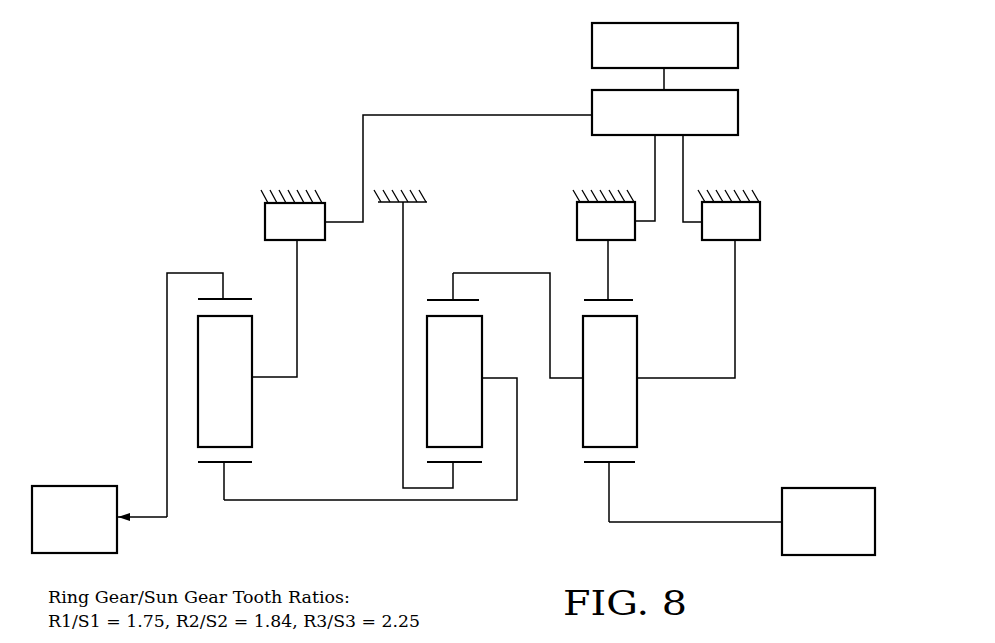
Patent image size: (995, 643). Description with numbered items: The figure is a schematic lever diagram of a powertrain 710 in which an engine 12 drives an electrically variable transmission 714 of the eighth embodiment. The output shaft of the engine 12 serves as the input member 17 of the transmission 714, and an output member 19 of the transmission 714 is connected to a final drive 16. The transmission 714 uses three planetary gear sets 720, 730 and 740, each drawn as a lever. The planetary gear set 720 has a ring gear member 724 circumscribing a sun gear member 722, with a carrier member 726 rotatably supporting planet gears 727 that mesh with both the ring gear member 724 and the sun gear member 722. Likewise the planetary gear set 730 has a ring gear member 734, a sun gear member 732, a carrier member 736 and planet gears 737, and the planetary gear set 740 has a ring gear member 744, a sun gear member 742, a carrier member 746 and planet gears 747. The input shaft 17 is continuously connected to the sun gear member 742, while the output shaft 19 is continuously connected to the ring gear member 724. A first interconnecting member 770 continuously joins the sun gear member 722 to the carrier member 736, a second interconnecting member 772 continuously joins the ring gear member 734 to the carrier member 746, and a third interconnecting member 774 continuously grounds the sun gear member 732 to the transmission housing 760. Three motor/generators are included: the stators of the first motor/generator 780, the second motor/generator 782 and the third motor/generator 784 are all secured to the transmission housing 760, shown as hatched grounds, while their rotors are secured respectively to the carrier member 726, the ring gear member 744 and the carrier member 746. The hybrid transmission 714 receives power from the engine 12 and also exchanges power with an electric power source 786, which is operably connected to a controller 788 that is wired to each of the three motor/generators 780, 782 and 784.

The powertrain 710 is at (144, 112).
The electrically variable transmission 714 is at (104, 154).
The engine 12 is at (814, 476).
The final drive 16 is at (99, 464).
The input member 17 is at (757, 525).
The output member 19 is at (138, 520).
The planetary gear set 720 is at (234, 468).
The sun gear member 722 is at (208, 463).
The ring gear member 724 is at (212, 298).
The carrier member 726 is at (266, 388).
The planet gears 727 is at (225, 381).
The planetary gear set 730 is at (466, 468).
The sun gear member 732 is at (437, 463).
The ring gear member 734 is at (468, 296).
The carrier member 736 is at (493, 370).
The planet gears 737 is at (454, 381).
The planetary gear set 740 is at (621, 468).
The sun gear member 742 is at (593, 463).
The ring gear member 744 is at (622, 298).
The carrier member 746 is at (653, 392).
The planet gears 747 is at (610, 381).
The transmission housing 760 is at (297, 196).
The first interconnecting member 770 is at (359, 502).
The second interconnecting member 772 is at (527, 272).
The third interconnecting member 774 is at (403, 412).
The first motor/generator 780 is at (254, 209).
The second motor/generator 782 is at (566, 209).
The third motor/generator 784 is at (773, 209).
The electric power source 786 is at (740, 43).
The controller 788 is at (740, 108).